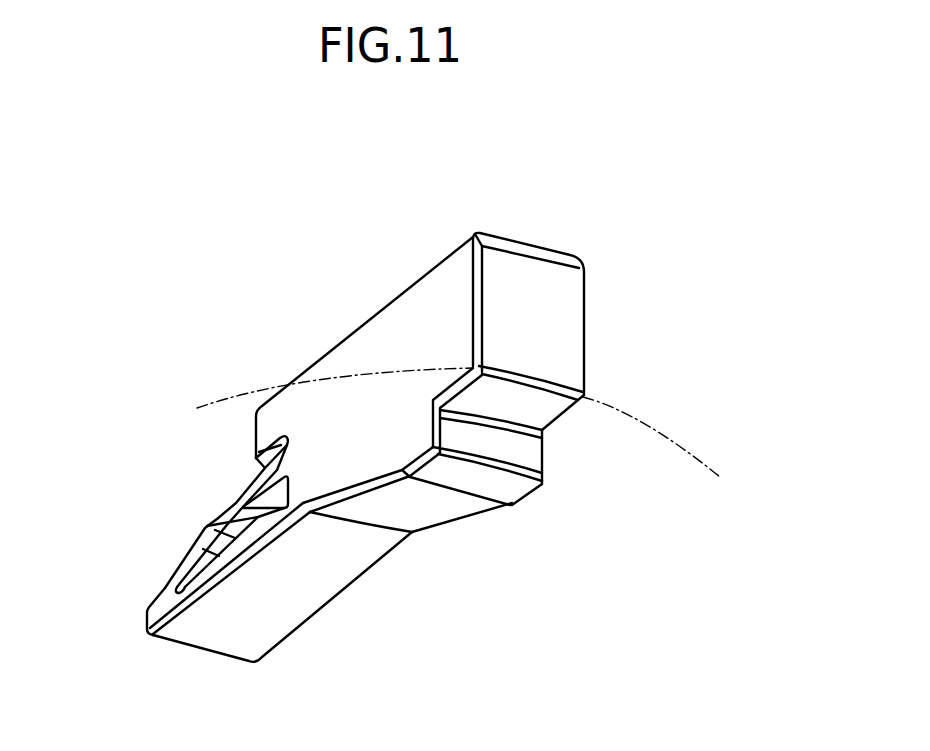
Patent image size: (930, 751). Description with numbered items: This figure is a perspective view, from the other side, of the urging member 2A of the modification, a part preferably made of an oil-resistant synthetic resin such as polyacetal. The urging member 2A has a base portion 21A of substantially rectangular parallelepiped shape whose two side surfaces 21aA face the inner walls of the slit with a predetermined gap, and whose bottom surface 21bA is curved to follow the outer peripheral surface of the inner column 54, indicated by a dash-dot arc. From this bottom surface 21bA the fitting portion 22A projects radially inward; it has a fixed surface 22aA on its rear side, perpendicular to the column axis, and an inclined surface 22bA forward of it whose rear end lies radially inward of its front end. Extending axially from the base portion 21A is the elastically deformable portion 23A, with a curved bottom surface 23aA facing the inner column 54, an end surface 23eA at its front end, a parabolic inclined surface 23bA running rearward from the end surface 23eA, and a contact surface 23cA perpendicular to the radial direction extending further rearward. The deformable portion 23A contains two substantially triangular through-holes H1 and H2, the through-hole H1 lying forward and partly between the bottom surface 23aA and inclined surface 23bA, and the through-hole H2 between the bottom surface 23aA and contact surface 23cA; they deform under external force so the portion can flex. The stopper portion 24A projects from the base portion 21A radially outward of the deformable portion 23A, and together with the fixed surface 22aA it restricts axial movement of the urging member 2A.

The urging member 2A is at (522, 197).
The base portion 21A is at (438, 297).
The side surface 21aA is at (410, 347).
The bottom surface 21bA is at (542, 407).
The fitting portion 22A is at (408, 457).
The fixed surface 22aA is at (518, 448).
The inclined surface 22bA is at (430, 502).
The deformable portion 23A is at (235, 568).
The bottom surface 23aA is at (303, 580).
The inclined surface 23bA is at (188, 553).
The contact surface 23cA is at (238, 505).
The end surface 23eA is at (145, 620).
The stopper portion 24A is at (256, 433).
The through-hole H1 is at (199, 568).
The through-hole H2 is at (270, 498).
The inner column 54 is at (684, 447).